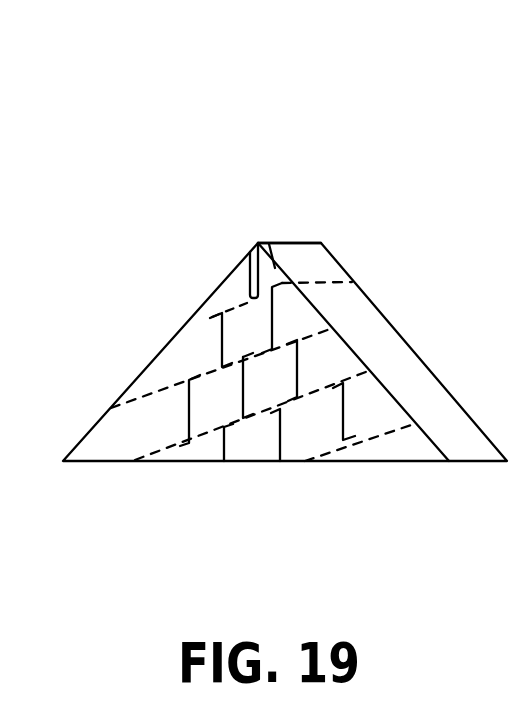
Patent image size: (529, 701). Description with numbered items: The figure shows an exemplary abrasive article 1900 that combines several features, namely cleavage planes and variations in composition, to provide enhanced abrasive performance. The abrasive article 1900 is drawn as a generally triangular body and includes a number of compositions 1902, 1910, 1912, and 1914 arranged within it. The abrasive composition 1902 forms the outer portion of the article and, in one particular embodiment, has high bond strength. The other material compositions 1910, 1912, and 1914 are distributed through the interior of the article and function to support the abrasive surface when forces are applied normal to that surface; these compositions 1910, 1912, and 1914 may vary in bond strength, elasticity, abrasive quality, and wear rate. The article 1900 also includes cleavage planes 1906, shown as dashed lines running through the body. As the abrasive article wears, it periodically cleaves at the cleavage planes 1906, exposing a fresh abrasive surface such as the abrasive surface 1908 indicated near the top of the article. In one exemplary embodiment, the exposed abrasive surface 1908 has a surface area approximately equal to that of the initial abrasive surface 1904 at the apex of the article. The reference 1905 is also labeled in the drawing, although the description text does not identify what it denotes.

The abrasive article 1900 is at (197, 68).
The abrasive composition 1902 is at (323, 267).
The initial abrasive surface 1904 is at (293, 243).
The upper fold line 1905 is at (157, 393).
The cleavage planes 1906 is at (250, 252).
The abrasive surface 1908 is at (332, 283).
The material composition 1910 is at (269, 244).
The material composition 1912 is at (233, 320).
The material composition 1914 is at (178, 360).